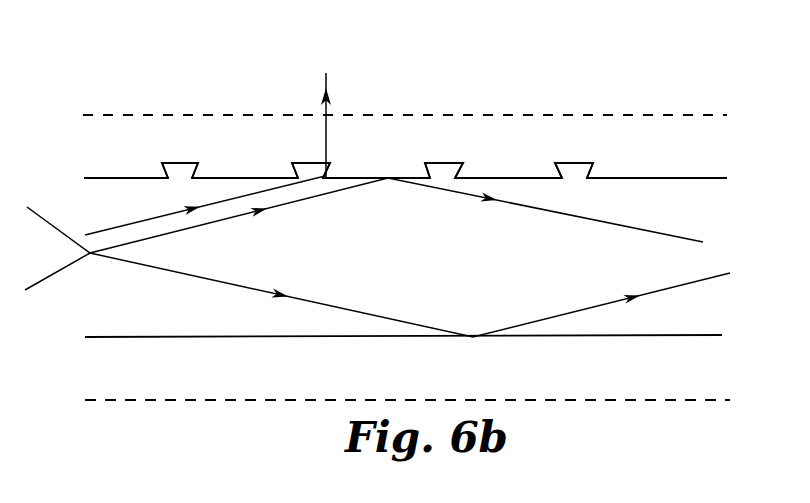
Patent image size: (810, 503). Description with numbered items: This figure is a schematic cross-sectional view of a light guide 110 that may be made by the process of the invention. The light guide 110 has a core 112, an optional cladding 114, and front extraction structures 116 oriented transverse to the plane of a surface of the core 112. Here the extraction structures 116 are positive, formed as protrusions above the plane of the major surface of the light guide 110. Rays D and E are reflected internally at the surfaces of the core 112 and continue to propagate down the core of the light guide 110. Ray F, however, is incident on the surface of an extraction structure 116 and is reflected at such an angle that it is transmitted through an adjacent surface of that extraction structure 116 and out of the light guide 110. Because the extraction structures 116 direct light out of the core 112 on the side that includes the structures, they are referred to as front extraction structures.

The light guide 110 is at (565, 92).
The core 112 is at (610, 200).
The cladding 114 is at (692, 147).
The front extraction structures 116 is at (427, 173).
The ray D is at (378, 260).
The ray E is at (366, 247).
The ray F is at (217, 148).